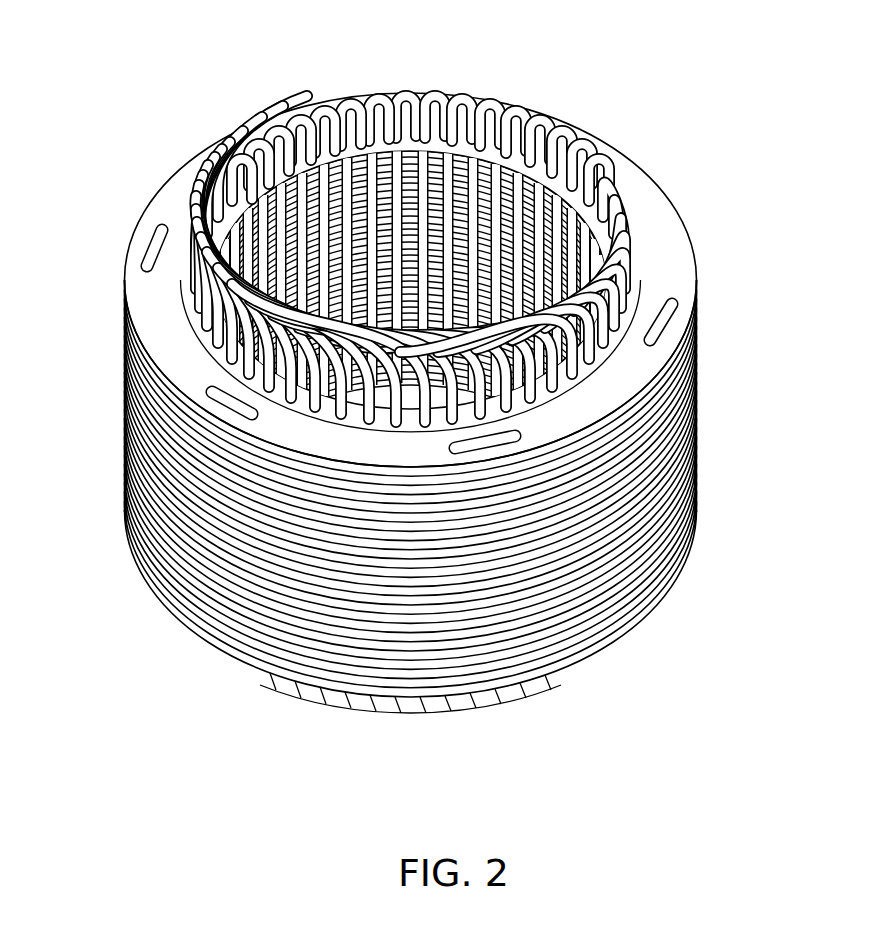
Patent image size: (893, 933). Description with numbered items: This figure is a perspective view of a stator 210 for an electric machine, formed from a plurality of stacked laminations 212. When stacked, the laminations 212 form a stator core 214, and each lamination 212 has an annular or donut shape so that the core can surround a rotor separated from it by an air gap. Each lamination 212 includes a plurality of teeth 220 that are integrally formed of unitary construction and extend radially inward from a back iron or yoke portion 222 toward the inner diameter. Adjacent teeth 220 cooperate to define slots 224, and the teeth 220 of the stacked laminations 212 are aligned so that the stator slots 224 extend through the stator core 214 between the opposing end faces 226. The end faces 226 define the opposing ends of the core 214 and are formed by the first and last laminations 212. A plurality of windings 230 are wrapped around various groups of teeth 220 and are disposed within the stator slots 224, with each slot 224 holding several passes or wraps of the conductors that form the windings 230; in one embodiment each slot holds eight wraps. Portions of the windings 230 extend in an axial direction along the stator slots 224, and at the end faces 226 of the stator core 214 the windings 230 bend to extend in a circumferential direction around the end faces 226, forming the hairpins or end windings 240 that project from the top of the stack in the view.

The stator 210 is at (650, 78).
The lamination 212 is at (670, 257).
The stator core 214 is at (695, 410).
The teeth 220 is at (323, 163).
The yoke portion 222 is at (178, 193).
The slots 224 is at (695, 470).
The end faces 226 is at (140, 302).
The windings 230 is at (267, 428).
The end windings 240 is at (627, 190).